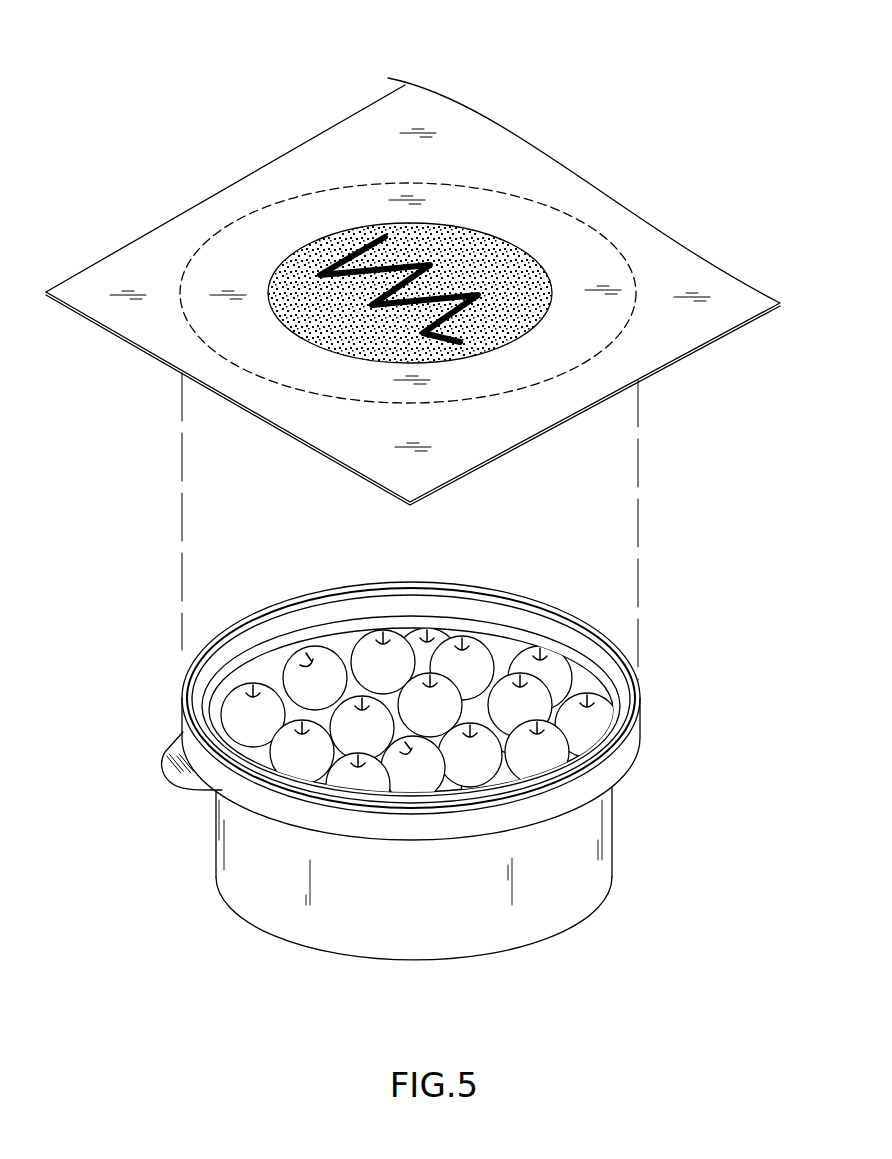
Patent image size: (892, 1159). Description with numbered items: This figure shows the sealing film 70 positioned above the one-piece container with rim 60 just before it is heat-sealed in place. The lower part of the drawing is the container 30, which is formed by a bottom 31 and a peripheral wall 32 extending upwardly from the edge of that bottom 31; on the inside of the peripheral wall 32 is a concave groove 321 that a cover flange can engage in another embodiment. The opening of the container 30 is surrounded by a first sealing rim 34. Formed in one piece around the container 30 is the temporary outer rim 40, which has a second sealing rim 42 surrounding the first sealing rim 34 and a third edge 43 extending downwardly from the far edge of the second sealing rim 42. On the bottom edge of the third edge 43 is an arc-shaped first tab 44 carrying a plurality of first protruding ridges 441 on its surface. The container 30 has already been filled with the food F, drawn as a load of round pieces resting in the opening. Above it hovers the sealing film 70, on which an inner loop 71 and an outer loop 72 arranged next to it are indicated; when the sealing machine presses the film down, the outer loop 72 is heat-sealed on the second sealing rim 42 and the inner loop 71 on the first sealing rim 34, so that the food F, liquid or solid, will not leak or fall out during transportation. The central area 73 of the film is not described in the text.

The container 30 is at (447, 760).
The bottom 31 is at (510, 948).
The peripheral wall 32 is at (610, 835).
The concave groove 321 is at (488, 635).
The first sealing rim 34 is at (607, 657).
The outer rim 40 is at (399, 711).
The second sealing rim 42 is at (618, 733).
The third edge 43 is at (615, 767).
The first tab 44 is at (144, 735).
The first protruding ridges 441 is at (175, 767).
The one-piece container with rim 60 is at (745, 592).
The sealing film 70 is at (620, 197).
The inner loop 71 is at (240, 240).
The outer loop 72 is at (303, 193).
The label area 73 is at (463, 260).
The food F is at (313, 660).